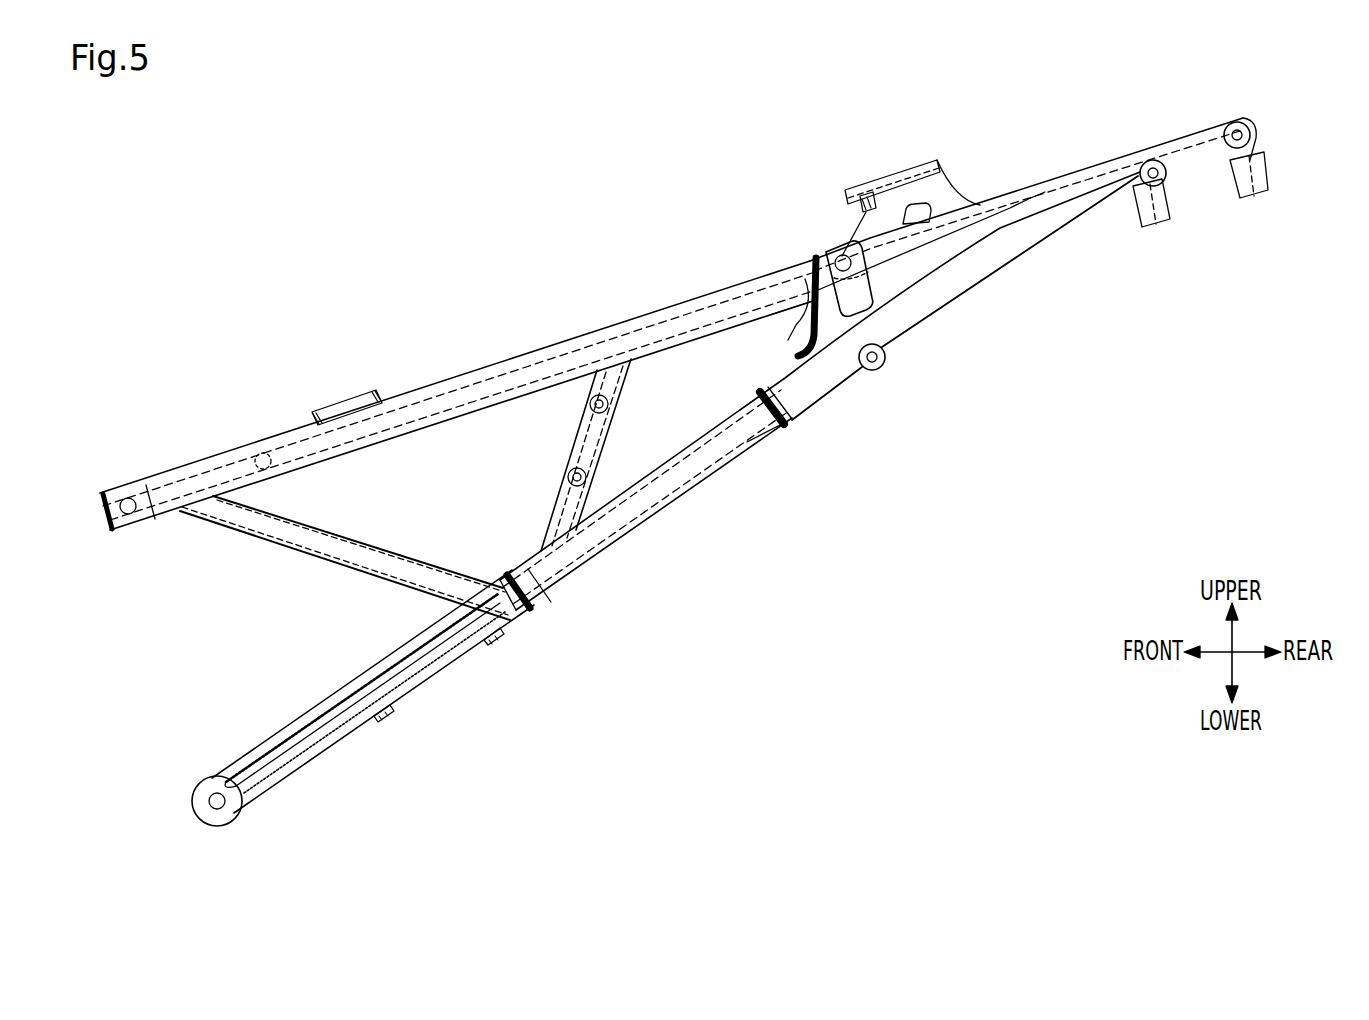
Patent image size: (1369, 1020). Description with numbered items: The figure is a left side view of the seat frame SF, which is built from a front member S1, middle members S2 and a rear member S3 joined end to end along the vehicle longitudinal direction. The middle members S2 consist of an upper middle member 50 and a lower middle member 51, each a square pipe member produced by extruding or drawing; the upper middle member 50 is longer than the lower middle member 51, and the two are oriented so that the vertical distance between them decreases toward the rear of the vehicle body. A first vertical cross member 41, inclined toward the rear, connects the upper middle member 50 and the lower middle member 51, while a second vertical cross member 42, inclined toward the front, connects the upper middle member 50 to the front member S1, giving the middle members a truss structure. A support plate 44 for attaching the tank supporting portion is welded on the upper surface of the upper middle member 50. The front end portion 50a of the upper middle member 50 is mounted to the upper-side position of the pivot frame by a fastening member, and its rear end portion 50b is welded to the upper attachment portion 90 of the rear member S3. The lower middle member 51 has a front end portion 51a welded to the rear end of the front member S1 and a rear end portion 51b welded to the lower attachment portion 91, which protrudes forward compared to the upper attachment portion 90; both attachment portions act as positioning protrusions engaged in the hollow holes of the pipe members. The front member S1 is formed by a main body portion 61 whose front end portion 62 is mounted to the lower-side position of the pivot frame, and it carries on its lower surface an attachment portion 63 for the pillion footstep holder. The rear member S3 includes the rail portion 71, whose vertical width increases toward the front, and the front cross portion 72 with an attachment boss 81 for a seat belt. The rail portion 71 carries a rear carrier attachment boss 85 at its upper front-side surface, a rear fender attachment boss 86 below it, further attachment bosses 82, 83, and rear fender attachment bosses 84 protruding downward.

The seat frame SF is at (678, 183).
The front member S1 is at (326, 750).
The middle members S2 is at (598, 257).
The rear member S3 is at (1039, 181).
The first vertical cross member 41 is at (578, 428).
The second vertical cross member 42 is at (345, 548).
The support plate 44 is at (322, 410).
The upper middle member 50 is at (525, 370).
The front end portion 50a is at (106, 492).
The rear end portion 50b is at (790, 300).
The lower middle member 51 is at (685, 458).
The front end portion 51a is at (538, 588).
The rear end portion 51b is at (755, 424).
The main body portion 61 is at (345, 728).
The front end portion 62 is at (213, 809).
The attachment portion for the pillion footstep holder 63 is at (494, 636).
The rail portion 71 is at (1100, 170).
The front cross portion 72 is at (848, 190).
The attachment boss 81 is at (920, 204).
The attachment boss 82 is at (1151, 159).
The attachment boss 83 is at (1237, 121).
The rear fender attachment boss 84 is at (1165, 226).
The rear carrier attachment boss 85 is at (838, 262).
The rear fender attachment boss 86 is at (886, 362).
The upper attachment portion 90 is at (800, 322).
The lower attachment portion 91 is at (768, 406).